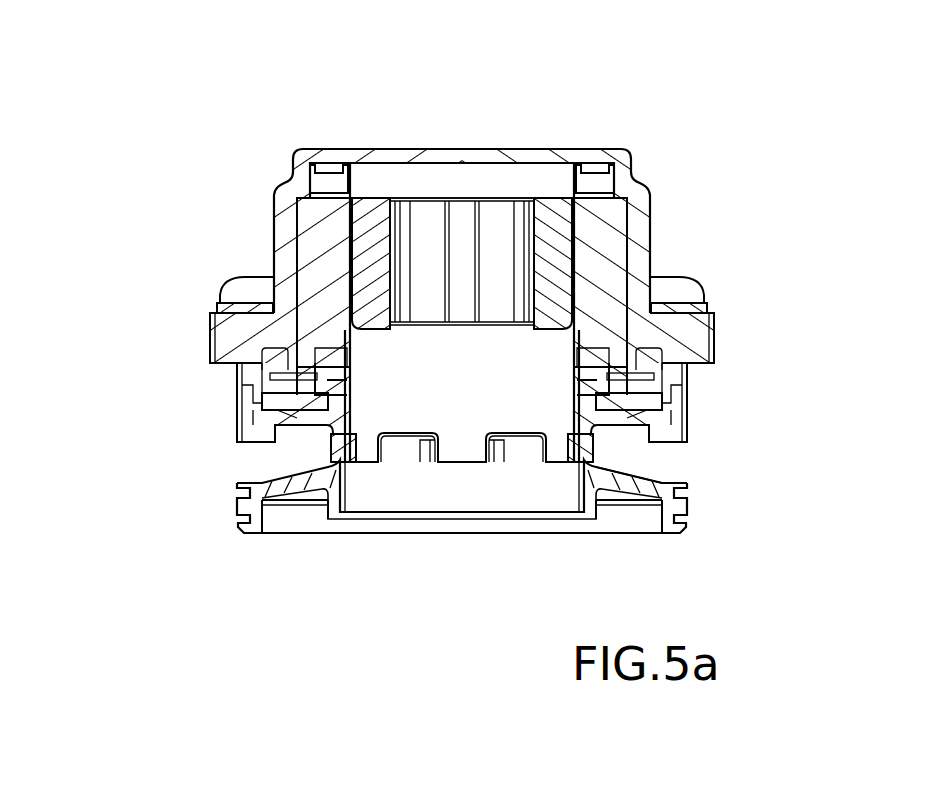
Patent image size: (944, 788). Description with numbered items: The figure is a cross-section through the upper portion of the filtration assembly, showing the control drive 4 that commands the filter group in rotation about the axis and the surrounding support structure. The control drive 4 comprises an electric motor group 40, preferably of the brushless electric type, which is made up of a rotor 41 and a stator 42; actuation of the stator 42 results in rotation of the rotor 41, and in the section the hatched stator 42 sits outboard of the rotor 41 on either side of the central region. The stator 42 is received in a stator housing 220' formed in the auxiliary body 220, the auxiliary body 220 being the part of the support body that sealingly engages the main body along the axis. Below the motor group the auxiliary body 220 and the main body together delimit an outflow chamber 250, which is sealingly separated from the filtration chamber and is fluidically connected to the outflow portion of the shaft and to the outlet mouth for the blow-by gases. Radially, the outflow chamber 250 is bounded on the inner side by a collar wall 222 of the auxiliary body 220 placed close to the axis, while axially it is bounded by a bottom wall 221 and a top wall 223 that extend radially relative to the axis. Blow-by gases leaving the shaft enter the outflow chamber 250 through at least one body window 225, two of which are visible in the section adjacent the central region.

The control drive 4 is at (555, 178).
The stator housing 220' is at (475, 108).
The stator 42 is at (317, 240).
The rotor 41 is at (367, 220).
The electric motor group 40 is at (430, 190).
The auxiliary body 220 is at (405, 291).
The top wall 223 is at (268, 423).
The collar wall 222 is at (331, 452).
The bottom wall 221 is at (240, 491).
The body window 225 is at (397, 450).
The outflow chamber 250 is at (612, 450).